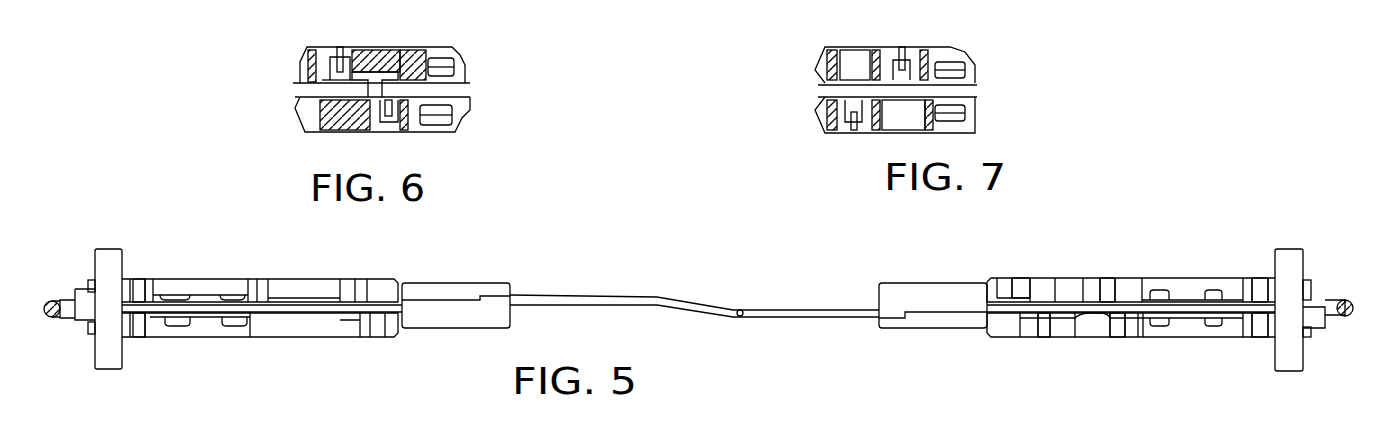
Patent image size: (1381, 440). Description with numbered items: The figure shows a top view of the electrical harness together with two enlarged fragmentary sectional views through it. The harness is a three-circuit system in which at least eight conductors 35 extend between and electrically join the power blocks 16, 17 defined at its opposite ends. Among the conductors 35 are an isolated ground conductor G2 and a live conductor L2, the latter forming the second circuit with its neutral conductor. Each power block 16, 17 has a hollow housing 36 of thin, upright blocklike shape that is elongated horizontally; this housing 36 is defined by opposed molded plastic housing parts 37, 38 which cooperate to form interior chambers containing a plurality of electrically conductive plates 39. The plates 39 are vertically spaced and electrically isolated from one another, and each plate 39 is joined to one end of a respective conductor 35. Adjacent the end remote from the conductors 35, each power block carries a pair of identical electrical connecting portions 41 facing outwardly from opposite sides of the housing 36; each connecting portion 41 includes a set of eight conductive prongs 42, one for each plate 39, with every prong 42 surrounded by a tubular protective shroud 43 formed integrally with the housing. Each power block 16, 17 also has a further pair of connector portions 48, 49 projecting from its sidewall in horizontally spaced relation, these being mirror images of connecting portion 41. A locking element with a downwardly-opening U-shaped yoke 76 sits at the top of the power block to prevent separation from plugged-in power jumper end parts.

In FIG. 5, the power block 16 is at (970, 333).
In FIG. 5, the power block 17 is at (462, 331).
In FIG. 5, the conductors 35 is at (598, 297).
In FIG. 5, the hollow housing 36 is at (222, 277).
In FIG. 6, the housing part 37 is at (330, 108).
In FIG. 5, the housing part 37 is at (1190, 329).
In FIG. 6, the housing part 38 is at (413, 62).
In FIG. 5, the housing part 38 is at (1187, 290).
In FIG. 6, the electrically conductive plates 39 is at (318, 78).
In FIG. 7, the electrically conductive plates 39 is at (858, 90).
In FIG. 5, the electrical connecting portion 41 is at (145, 277).
In FIG. 6, the conductive prongs 42 is at (357, 72).
In FIG. 6, the tubular protective shroud 43 is at (420, 115).
In FIG. 7, the tubular protective shroud 43 is at (855, 113).
In FIG. 5, the electrical connector portion 48 is at (1117, 340).
In FIG. 5, the electrical connector portion 49 is at (1042, 339).
In FIG. 5, the U-shaped yoke 76 is at (105, 353).
In FIG. 6, the isolated ground conductor G2 is at (428, 150).
In FIG. 7, the live conductor L2 is at (906, 65).